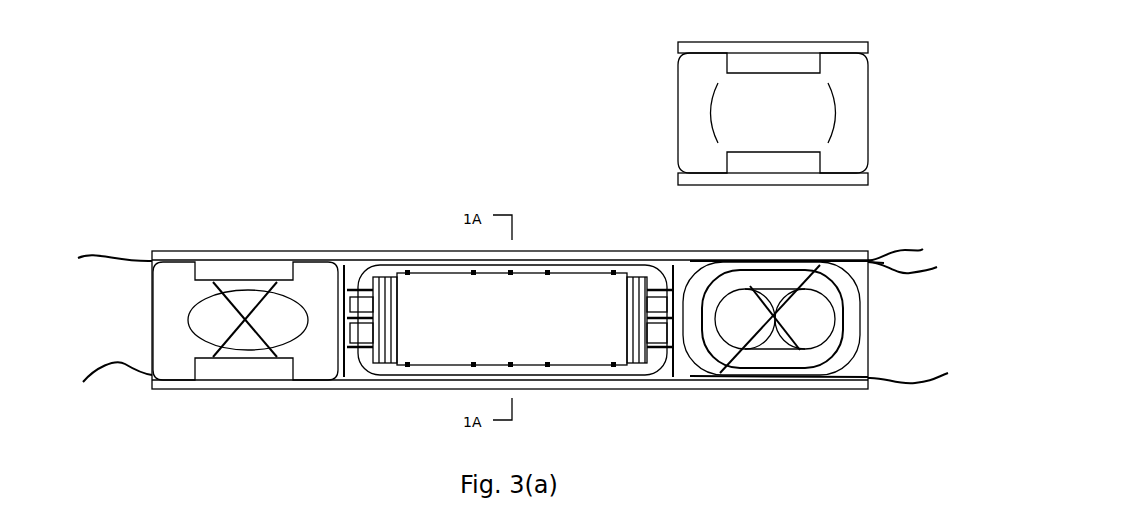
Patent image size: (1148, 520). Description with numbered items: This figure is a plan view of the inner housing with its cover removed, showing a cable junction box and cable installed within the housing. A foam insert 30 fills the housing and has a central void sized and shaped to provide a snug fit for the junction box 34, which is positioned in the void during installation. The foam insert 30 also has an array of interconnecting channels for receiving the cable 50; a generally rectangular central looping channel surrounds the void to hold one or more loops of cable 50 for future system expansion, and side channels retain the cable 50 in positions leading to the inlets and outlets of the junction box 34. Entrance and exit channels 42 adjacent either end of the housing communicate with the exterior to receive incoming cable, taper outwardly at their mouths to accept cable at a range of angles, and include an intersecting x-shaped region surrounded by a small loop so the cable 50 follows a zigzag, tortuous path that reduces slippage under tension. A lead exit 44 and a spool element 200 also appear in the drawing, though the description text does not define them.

The foam insert 30 is at (508, 273).
The junction box 34 is at (512, 341).
The entrance and exit channels 42 is at (790, 351).
The lead exit 44 is at (908, 284).
The cable 50 is at (513, 315).
The spool (bobbin) 200 is at (510, 232).